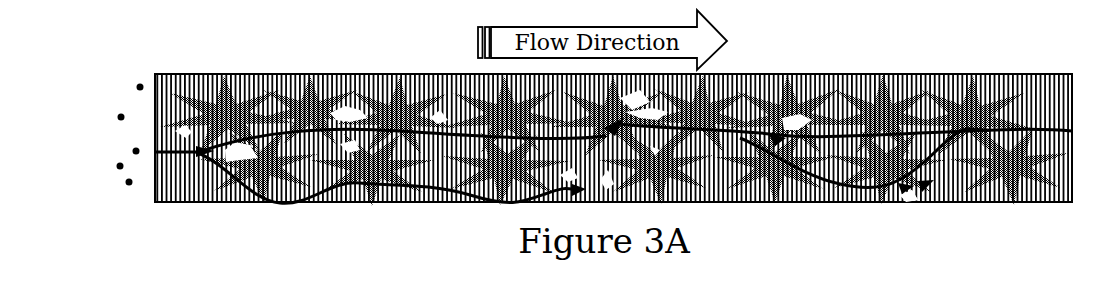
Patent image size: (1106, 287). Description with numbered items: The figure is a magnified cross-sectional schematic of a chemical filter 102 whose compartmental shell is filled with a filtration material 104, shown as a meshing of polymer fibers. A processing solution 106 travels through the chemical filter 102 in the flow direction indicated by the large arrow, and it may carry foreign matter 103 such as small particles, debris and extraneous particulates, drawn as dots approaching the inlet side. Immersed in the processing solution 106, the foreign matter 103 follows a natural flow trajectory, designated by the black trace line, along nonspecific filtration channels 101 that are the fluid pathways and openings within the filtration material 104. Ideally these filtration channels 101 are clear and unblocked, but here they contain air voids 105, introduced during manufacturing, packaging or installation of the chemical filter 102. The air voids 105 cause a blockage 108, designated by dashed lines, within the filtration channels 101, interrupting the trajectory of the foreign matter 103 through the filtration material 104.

The filtration channels 101 is at (313, 203).
The chemical filter 102 is at (177, 203).
The foreign matter 103 is at (118, 164).
The filtration material 104 is at (227, 84).
The air voids 105 is at (348, 114).
The processing solution 106 is at (453, 118).
The blockage 108 is at (910, 203).